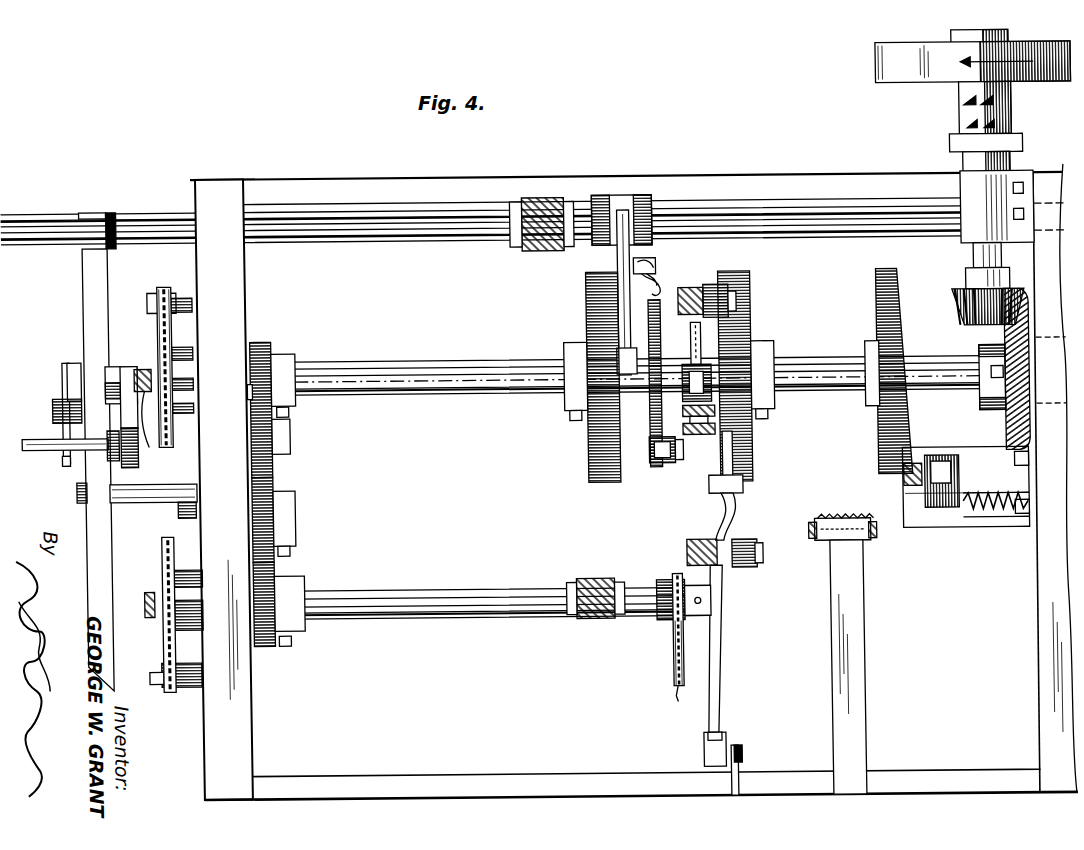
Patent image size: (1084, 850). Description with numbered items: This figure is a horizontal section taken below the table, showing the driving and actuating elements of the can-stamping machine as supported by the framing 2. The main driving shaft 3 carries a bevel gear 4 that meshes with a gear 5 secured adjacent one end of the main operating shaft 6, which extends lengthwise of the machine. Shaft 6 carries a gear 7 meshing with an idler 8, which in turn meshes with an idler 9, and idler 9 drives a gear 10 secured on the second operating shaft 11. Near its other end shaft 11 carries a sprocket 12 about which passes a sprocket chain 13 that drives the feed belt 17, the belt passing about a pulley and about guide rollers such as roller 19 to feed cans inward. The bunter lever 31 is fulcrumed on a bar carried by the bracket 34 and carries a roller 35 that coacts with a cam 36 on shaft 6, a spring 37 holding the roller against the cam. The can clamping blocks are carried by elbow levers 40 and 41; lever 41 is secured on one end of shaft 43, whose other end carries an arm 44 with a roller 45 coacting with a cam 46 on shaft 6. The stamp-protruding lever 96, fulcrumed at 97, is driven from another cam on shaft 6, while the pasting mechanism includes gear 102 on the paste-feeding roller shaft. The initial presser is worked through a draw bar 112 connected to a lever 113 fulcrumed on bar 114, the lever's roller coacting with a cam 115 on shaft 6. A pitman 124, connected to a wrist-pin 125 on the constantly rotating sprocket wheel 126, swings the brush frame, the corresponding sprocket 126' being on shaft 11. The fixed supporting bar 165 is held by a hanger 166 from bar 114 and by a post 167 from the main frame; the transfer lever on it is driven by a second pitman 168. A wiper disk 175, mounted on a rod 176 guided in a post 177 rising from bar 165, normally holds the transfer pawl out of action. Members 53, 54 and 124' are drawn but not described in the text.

The framing 2 is at (433, 350).
The main driving shaft 3 is at (970, 258).
The bevel gear 4 is at (962, 312).
The gear 5 is at (1002, 424).
The main operating shaft 6 is at (397, 366).
The gear 7 is at (258, 345).
The idler 8 is at (292, 448).
The idler 9 is at (290, 520).
The gear 10 is at (282, 577).
The second operating shaft 11 is at (400, 596).
The sprocket 12 is at (666, 618).
The sprocket chain 13 is at (668, 664).
The feed belt 17 is at (856, 668).
The guide roller 19 is at (850, 552).
The lever 31 is at (936, 498).
The bracket 34 is at (1026, 494).
The roller 35 is at (918, 490).
The cam 36 is at (880, 434).
The spring 37 is at (968, 526).
The elbow lever 40 is at (724, 523).
The elbow lever 41 is at (716, 478).
The shaft 43 is at (698, 440).
The arm or lever 44 is at (656, 468).
The roller 45 is at (640, 462).
The cam 46 is at (642, 383).
The rod 53 is at (717, 632).
The chain 54 is at (693, 629).
The lever 96 is at (745, 322).
The fulcrum 97 is at (732, 303).
The gear 102 is at (687, 354).
The draw bar or rod 112 is at (664, 285).
The lever 113 is at (616, 304).
The bar 114 is at (137, 222).
The cam 115 is at (592, 447).
The pitman 124 is at (138, 362).
The ratchet block 124' is at (140, 628).
The wrist-pin 125 is at (147, 420).
The sprocket wheel 126 is at (194, 367).
The sprocket 126' is at (201, 615).
The supporting bar 165 is at (84, 288).
The hanger 166 is at (116, 248).
The rod or post 167 is at (148, 504).
The pitman 168 is at (60, 433).
The disk 175 is at (133, 466).
The rod 176 is at (44, 451).
The post 177 is at (104, 447).